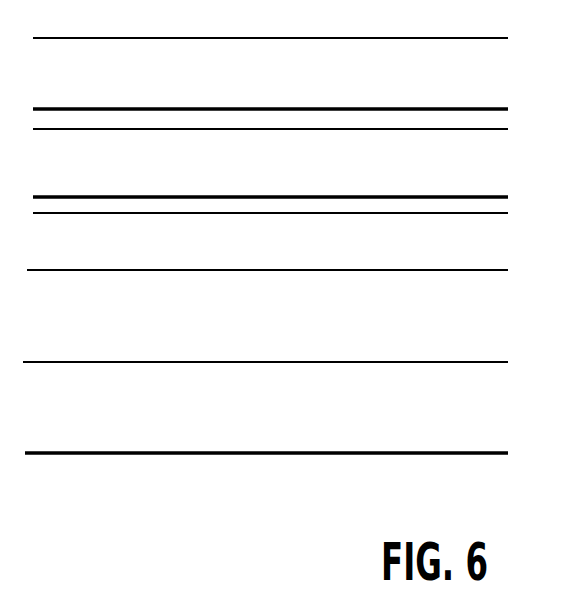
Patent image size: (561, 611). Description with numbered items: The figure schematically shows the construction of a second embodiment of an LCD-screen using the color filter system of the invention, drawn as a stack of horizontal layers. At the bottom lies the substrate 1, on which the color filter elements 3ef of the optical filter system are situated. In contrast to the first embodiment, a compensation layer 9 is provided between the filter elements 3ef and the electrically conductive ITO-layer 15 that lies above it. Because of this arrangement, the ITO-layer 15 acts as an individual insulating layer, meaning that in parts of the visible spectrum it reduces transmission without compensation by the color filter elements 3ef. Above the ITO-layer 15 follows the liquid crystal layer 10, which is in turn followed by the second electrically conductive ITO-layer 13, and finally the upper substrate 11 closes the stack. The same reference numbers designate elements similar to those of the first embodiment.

The substrate 11 is at (139, 87).
The electrically conductive ITO-layer 13 is at (198, 118).
The liquid crystal layer 10 is at (138, 173).
The electrically conductive ITO-layer 15 is at (208, 205).
The compensation layer 9 is at (267, 241).
The color filter elements 3ef is at (265, 331).
The substrate 1 is at (124, 425).